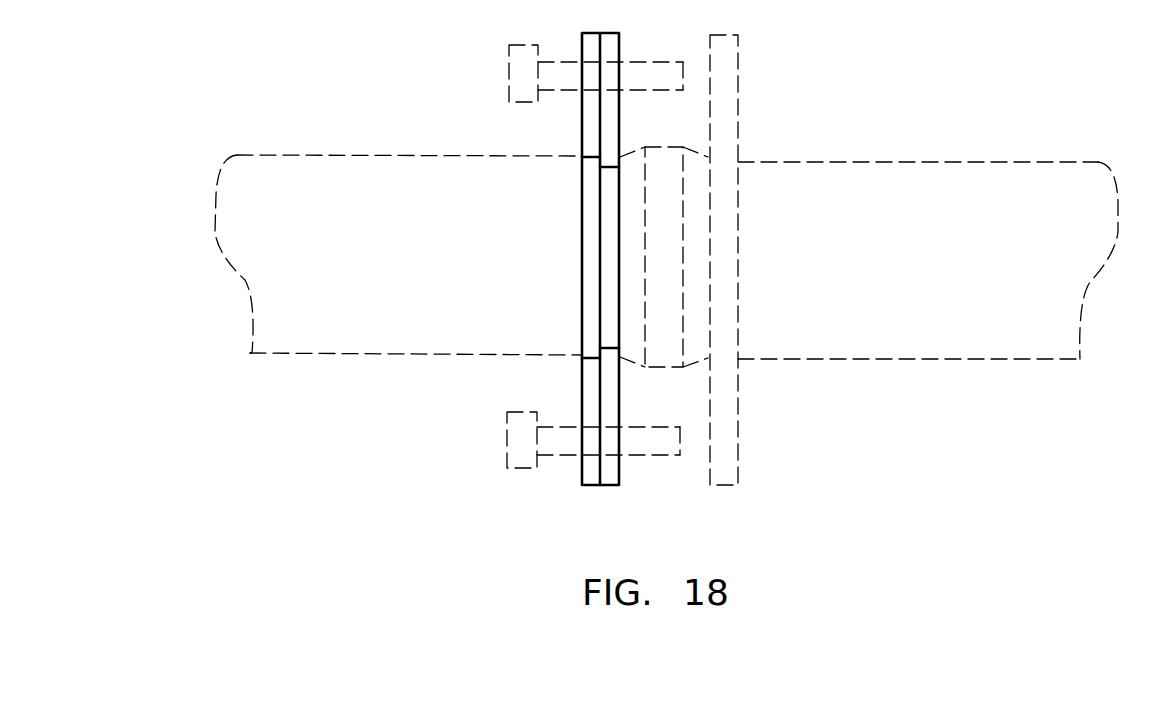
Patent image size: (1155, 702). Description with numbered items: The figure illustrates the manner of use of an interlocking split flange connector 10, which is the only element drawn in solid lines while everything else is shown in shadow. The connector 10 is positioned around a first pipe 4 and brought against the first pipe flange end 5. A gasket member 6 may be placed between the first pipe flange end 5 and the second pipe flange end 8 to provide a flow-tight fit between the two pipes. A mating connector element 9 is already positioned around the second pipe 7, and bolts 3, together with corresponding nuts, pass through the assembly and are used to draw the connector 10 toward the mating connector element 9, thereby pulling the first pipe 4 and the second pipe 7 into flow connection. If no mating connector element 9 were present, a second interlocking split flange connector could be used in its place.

The bolts 3 is at (508, 72).
The first pipe 4 is at (347, 354).
The first pipe flange end 5 is at (645, 247).
The gasket member 6 is at (658, 368).
The second pipe 7 is at (900, 360).
The second pipe flange end 8 is at (683, 212).
The mating connector element 9 is at (738, 92).
The interlocking split flange connector 10 is at (598, 485).